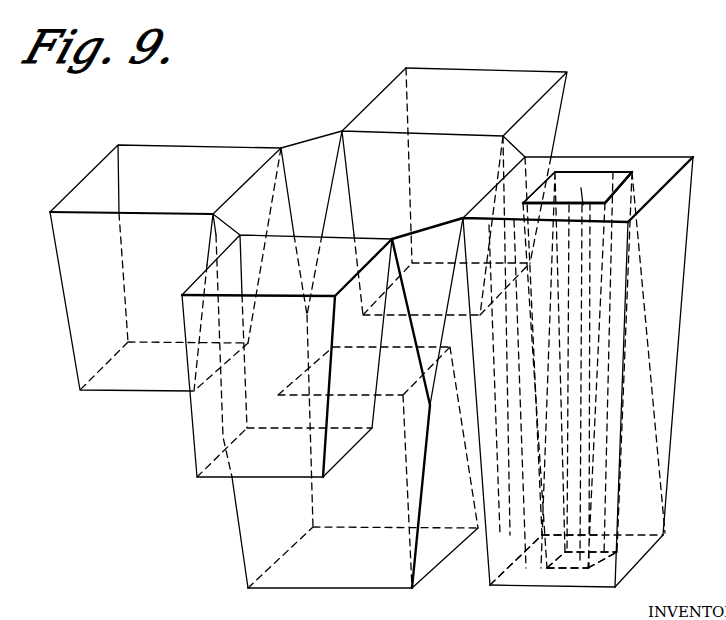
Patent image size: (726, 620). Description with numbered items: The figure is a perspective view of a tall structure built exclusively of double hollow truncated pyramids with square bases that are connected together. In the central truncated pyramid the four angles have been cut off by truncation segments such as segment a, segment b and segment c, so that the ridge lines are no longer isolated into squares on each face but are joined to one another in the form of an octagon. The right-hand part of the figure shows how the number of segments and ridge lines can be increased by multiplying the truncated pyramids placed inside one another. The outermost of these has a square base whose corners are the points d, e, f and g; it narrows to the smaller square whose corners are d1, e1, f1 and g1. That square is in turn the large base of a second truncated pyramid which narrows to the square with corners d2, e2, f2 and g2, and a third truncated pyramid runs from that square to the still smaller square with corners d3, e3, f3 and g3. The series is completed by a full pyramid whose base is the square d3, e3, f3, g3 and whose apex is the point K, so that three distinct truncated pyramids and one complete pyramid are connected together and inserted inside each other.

The truncation segment a is at (277, 235).
The truncation segment b is at (405, 297).
The truncation segment c is at (287, 356).
The base corner of outer truncated pyramid d is at (510, 371).
The base corner of outer truncated pyramid e is at (591, 334).
The base corner of outer truncated pyramid f is at (666, 336).
The base corner of outer truncated pyramid g is at (628, 402).
The apex of complete pyramid K is at (589, 370).
The corner of first intermediate square d1 is at (547, 572).
The corner of first intermediate square e1 is at (545, 550).
The corner of first intermediate square f1 is at (615, 537).
The corner of first intermediate square g1 is at (634, 573).
The corner of second intermediate square d2 is at (552, 207).
The corner of second intermediate square e2 is at (577, 176).
The corner of second intermediate square f2 is at (604, 167).
The corner of second intermediate square g2 is at (618, 197).
The corner of innermost square d3 is at (558, 570).
The corner of innermost square e3 is at (582, 551).
The corner of innermost square f3 is at (599, 555).
The corner of innermost square g3 is at (582, 570).